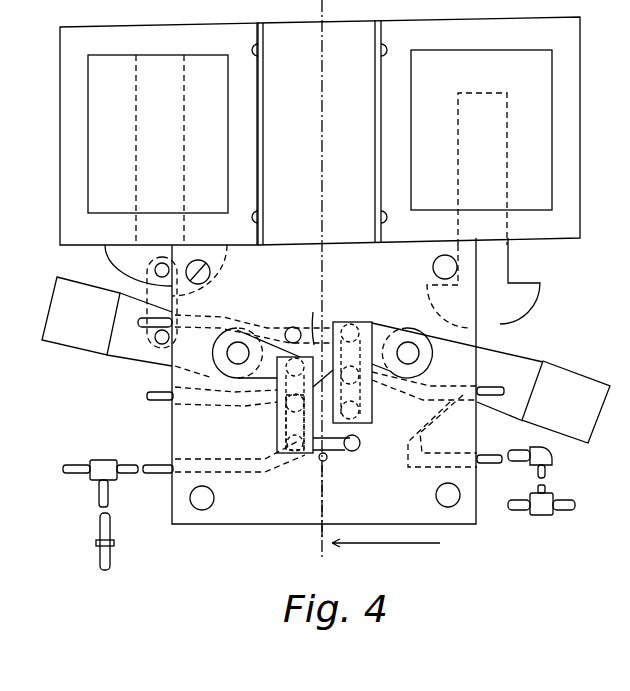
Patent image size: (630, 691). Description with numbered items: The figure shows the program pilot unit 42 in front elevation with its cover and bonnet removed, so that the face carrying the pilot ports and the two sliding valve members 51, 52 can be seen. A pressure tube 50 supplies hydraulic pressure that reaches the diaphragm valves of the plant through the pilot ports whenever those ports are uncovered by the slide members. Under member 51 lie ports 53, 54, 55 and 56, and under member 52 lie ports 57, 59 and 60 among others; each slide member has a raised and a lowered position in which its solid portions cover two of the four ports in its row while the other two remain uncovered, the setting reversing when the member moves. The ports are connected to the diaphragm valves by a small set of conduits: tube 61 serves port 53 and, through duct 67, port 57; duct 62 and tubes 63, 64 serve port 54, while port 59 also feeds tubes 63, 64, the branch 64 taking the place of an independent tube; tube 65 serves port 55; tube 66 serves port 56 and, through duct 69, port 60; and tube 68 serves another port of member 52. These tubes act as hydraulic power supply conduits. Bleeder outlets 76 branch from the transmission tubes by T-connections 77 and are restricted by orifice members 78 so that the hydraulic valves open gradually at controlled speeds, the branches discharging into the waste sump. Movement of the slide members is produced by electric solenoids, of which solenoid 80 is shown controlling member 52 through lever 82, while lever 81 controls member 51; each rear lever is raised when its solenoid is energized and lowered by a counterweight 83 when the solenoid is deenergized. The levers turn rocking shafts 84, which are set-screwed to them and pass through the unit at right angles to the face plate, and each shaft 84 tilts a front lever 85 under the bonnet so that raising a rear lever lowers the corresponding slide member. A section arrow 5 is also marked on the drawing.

The section line arrow 5 is at (386, 544).
The program pilot valve 42 is at (568, 307).
The pressure tube 50 is at (350, 357).
The sliding valve member 51 is at (278, 432).
The sliding valve member 52 is at (370, 376).
The pilot port 53 is at (286, 330).
The pilot port 54 is at (277, 374).
The pilot port 55 is at (283, 405).
The pilot port 56 is at (285, 445).
The pilot port 57 is at (357, 322).
The pilot port 59 is at (356, 436).
The pilot port 60 is at (354, 451).
The tube 61 is at (150, 347).
The duct 62 is at (306, 318).
The tube 63 is at (492, 455).
The branch 64 is at (565, 510).
The tube 65 is at (158, 401).
The tube 66 is at (163, 474).
The duct 67 is at (325, 355).
The tube 68 is at (500, 386).
The duct 69 is at (340, 462).
The bleeder outlet 76 is at (111, 522).
The T-connection 77 is at (60, 145).
The orifice member 78 is at (115, 544).
The electric solenoid 80 is at (580, 116).
The lever 81 is at (126, 360).
The lever 82 is at (508, 410).
The counterweight 83 is at (74, 348).
The rocking shaft 84 is at (238, 342).
The front lever 85 is at (255, 392).